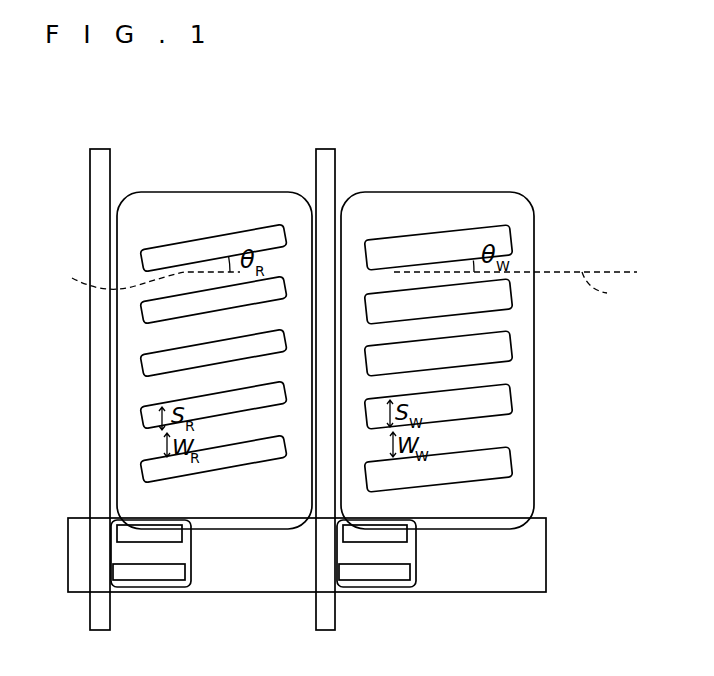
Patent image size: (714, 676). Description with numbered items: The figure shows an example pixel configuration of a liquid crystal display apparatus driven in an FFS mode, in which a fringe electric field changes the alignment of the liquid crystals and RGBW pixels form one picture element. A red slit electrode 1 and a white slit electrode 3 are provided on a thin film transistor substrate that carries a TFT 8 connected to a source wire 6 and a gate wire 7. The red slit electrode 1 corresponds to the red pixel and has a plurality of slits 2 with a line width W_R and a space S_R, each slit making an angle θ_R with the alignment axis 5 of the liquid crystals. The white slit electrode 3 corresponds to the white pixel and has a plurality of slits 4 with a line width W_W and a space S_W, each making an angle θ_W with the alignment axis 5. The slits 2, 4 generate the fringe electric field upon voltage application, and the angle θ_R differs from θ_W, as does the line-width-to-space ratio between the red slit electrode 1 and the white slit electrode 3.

The red slit electrode 1 is at (117, 227).
The slits 2 is at (142, 410).
The white slit electrode 3 is at (534, 345).
The slits 4 is at (511, 395).
The alignment axis 5 is at (344, 290).
The source wire 6 is at (328, 149).
The gate wire 7 is at (514, 585).
The TFT 8 is at (192, 565).